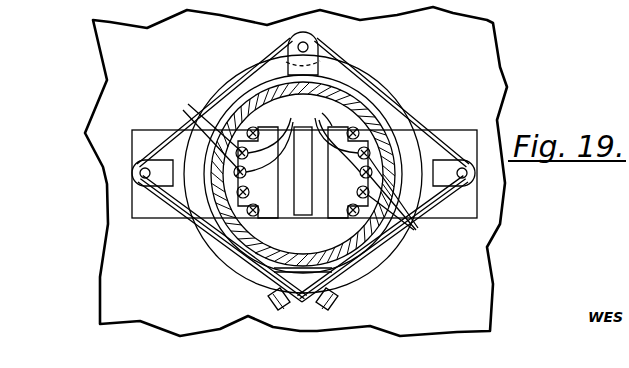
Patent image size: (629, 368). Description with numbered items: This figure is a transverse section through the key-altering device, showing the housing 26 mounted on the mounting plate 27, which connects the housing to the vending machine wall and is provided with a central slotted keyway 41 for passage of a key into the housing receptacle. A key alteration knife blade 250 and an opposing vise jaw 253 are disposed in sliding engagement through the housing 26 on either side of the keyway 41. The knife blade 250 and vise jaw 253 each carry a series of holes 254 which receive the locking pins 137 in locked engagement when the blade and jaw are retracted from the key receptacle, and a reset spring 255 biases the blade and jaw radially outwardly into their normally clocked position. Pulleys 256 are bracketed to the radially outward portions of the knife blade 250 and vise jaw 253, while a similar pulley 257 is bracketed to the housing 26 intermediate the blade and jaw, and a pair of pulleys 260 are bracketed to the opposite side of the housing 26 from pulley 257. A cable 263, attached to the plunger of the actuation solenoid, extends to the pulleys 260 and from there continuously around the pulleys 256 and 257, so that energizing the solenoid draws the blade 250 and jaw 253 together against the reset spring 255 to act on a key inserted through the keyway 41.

The mounting plate 27 is at (117, 43).
The pulley 257 is at (285, 64).
The cable 263 is at (236, 85).
The pulleys 256 is at (165, 140).
The locking pins 137 is at (302, 175).
The holes 254 is at (343, 128).
The reset spring 255 is at (396, 97).
The vise jaw 253 is at (450, 133).
The key alteration knife blade 250 is at (203, 196).
The housing 26 is at (228, 230).
The slotted keyway 41 is at (300, 206).
The pulleys 260 is at (295, 311).